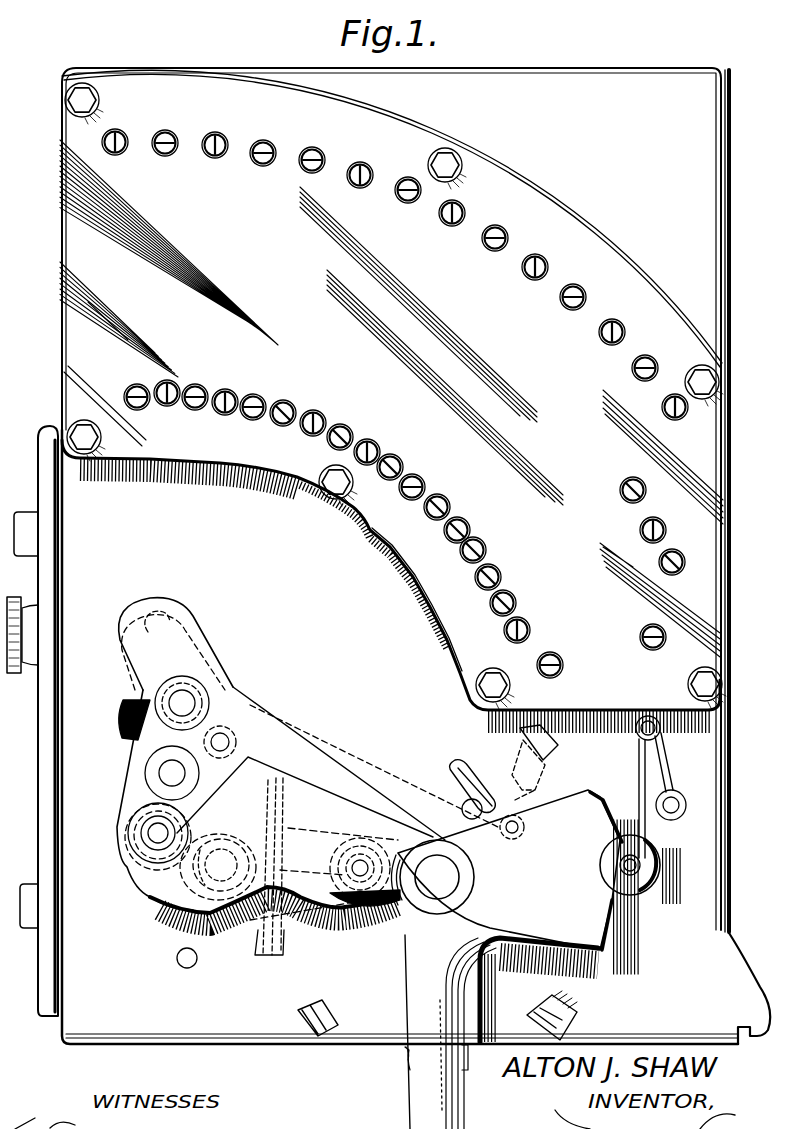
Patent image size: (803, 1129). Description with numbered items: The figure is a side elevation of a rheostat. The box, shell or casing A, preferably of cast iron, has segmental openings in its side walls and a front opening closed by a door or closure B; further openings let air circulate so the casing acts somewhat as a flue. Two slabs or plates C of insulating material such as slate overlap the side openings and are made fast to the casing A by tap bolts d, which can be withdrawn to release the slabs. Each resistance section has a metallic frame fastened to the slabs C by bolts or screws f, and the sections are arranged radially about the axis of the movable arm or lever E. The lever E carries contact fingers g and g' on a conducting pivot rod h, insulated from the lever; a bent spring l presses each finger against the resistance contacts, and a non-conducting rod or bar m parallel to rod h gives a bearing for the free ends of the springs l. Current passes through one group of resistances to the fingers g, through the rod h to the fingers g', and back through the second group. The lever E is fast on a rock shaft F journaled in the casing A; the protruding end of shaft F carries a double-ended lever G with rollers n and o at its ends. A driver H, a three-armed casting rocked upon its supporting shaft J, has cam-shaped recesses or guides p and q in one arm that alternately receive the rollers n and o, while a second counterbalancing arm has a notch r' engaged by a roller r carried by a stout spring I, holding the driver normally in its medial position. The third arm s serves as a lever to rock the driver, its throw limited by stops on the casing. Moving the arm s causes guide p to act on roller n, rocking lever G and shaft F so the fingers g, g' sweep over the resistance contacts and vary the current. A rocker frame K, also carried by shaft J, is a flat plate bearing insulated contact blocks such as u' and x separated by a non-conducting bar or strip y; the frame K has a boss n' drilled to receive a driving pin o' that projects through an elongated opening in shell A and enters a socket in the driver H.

The box, shell or casing A is at (652, 190).
The door or closure B is at (31, 721).
The slabs or plates of insulating material C is at (391, 398).
The tap bolts d is at (96, 106).
The bolts or screws f is at (195, 385).
The movable arm or lever E is at (352, 738).
The rock shaft F is at (154, 777).
The double-ended lever G is at (212, 796).
The driver H is at (540, 916).
The stout spring I is at (649, 787).
The supporting shaft J is at (432, 877).
The rocker frame K is at (312, 832).
The curved or cam-shaped recess or guide p is at (166, 612).
The roller n is at (198, 675).
The roller o is at (139, 847).
The curved or cam-shaped recess or guide q is at (224, 884).
The non-conducting bar or strip y is at (232, 860).
The contact block x is at (241, 954).
The contact block u' is at (270, 866).
The boss n' is at (339, 867).
The driving pin o' is at (350, 868).
The spring l is at (444, 794).
The rod or bar m is at (460, 812).
The conducting pivot rod h is at (506, 835).
The contact fingers g is at (517, 770).
The contact fingers g' is at (510, 742).
The roller r is at (647, 853).
The notch or depression r' is at (616, 856).
The third arm of the driver s is at (450, 1032).